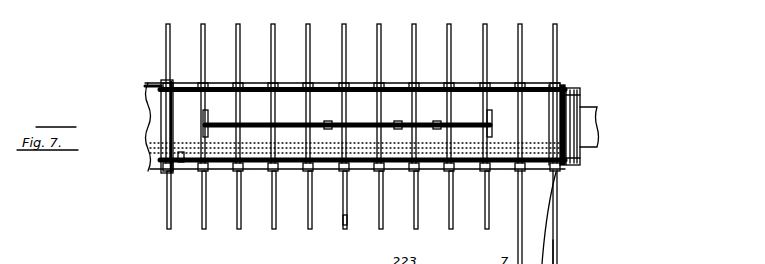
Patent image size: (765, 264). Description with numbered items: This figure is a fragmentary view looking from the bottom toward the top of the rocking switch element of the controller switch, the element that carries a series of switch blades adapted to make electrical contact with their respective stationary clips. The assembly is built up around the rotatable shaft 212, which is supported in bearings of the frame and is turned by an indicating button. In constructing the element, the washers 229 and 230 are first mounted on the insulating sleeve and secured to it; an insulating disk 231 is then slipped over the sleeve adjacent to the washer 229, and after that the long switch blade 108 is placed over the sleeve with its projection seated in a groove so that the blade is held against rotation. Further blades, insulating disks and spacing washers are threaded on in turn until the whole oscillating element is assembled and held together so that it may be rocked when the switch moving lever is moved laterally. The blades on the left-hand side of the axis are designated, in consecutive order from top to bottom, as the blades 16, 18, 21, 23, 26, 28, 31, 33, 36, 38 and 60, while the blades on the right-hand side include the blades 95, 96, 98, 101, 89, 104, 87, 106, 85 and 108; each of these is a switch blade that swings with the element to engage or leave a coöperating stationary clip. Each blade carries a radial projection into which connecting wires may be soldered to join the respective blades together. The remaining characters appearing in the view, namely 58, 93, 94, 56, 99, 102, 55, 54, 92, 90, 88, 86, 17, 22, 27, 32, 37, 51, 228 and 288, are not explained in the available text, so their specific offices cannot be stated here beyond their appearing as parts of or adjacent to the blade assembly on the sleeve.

The switch blade 16 is at (169, 24).
The switch blade 18 is at (204, 24).
The switch blade 21 is at (239, 24).
The switch blade 23 is at (274, 24).
The switch blade 26 is at (309, 24).
The switch blade 28 is at (345, 24).
The switch blade 31 is at (380, 24).
The switch blade 33 is at (415, 24).
The switch blade 36 is at (450, 24).
The switch blade 38 is at (486, 24).
The switch blade 60 is at (521, 24).
The pin 58 is at (556, 24).
The switch blade 95 is at (169, 229).
The lower pin 93 is at (204, 229).
The switch blade 98 is at (239, 229).
The lower pin 94 is at (275, 229).
The switch blade 101 is at (311, 229).
The lower pin 56 is at (382, 168).
The switch blade 104 is at (382, 229).
The switch blade 87 is at (417, 229).
The switch blade 106 is at (452, 229).
The switch blade 85 is at (488, 229).
The switch blade 96 is at (217, 86).
The pin block 99 is at (285, 86).
The pin block 102 is at (323, 86).
The pin block 55 is at (401, 86).
The pin block 54 is at (503, 87).
The middle bar 92 is at (254, 122).
The bar block 90 is at (330, 118).
The bar block 88 is at (398, 122).
The bar block 86 is at (437, 122).
The pin 17 is at (182, 152).
The lower bar 22 is at (250, 169).
The foot 27 is at (322, 169).
The foot 32 is at (392, 169).
The foot 37 is at (462, 169).
The foot 51 is at (517, 170).
The switch blade 89 is at (346, 222).
The insulating disk 231 is at (564, 86).
The washer 229 is at (578, 88).
The washer 230 is at (582, 93).
The rotatable shaft 212 is at (600, 136).
The lead 228 is at (549, 218).
The long switch blade 108 is at (562, 252).
The member 288 is at (89, 6).